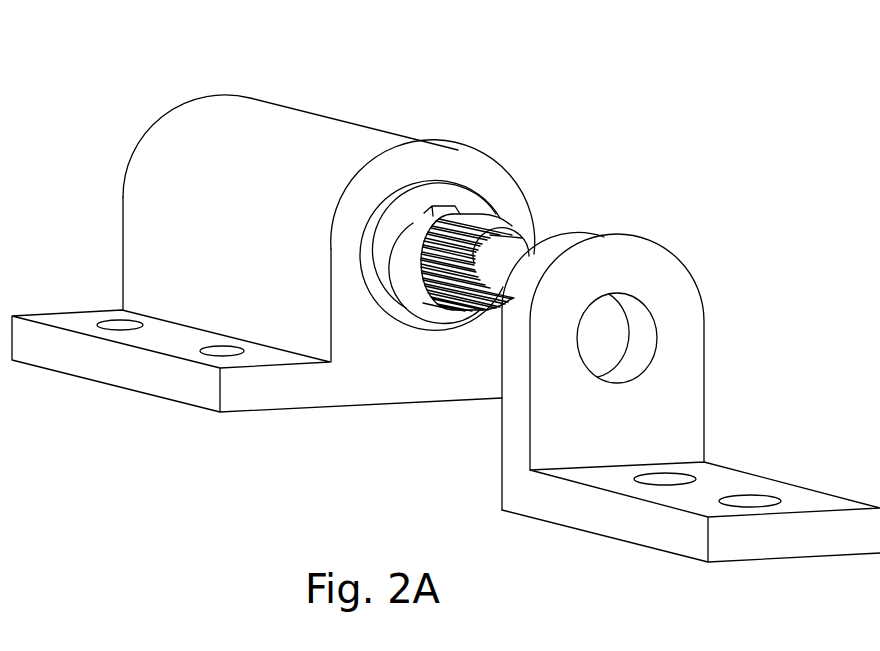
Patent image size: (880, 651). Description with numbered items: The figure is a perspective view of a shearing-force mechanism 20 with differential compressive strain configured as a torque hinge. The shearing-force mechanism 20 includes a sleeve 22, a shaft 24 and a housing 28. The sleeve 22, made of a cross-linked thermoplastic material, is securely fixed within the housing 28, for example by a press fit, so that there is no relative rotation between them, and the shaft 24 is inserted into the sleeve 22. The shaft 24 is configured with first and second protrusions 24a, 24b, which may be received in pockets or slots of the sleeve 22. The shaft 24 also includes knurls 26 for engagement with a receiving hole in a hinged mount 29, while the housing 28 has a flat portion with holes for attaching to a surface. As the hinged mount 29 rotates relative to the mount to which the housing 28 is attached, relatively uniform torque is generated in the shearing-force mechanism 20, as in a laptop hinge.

The shearing-force mechanism 20 is at (385, 88).
The sleeve 22 is at (472, 210).
The shaft 24 is at (408, 280).
The first protrusion 24a is at (448, 212).
The second protrusion 24b is at (447, 310).
The knurls 26 is at (493, 222).
The housing 28 is at (230, 142).
The hinged mount 29 is at (677, 303).